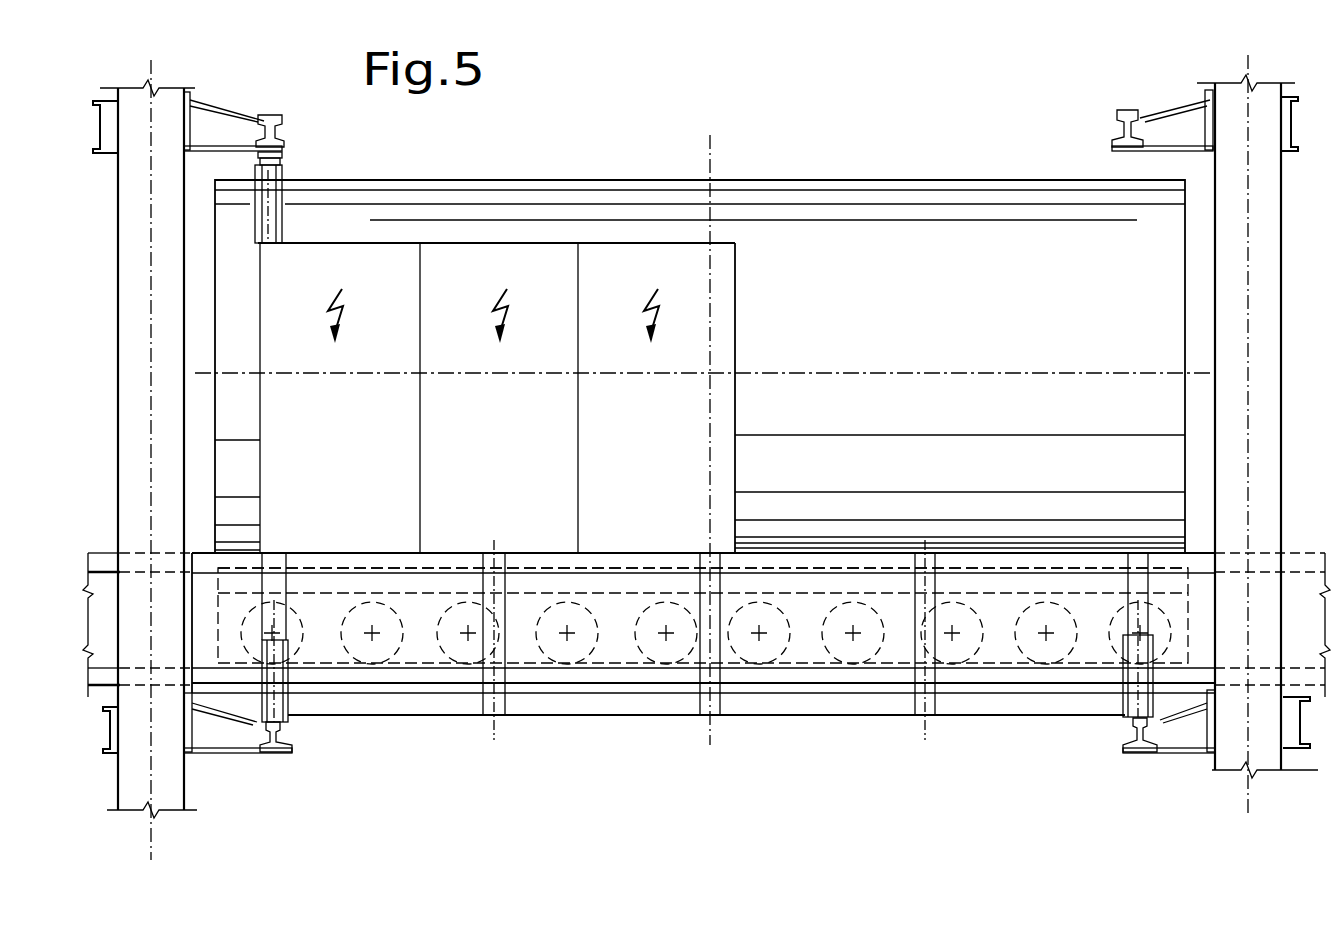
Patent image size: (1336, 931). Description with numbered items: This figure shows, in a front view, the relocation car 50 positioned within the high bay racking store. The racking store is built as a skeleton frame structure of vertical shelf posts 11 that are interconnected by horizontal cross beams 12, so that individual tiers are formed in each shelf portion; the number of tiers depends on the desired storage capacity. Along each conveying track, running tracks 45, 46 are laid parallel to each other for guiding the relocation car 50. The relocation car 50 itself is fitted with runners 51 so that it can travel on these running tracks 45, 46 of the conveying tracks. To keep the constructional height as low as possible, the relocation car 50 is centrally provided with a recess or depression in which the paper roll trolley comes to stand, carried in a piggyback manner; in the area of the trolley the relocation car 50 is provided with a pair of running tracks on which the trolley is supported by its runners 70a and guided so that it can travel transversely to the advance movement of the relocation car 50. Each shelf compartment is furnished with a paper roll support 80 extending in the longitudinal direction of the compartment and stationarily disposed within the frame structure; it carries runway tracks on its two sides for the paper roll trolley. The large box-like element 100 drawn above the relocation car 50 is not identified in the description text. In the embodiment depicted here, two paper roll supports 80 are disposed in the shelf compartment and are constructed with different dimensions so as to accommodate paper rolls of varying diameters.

The vertical shelf post 11 is at (125, 362).
The horizontal cross beam 12 is at (237, 742).
The running track 45 is at (266, 116).
The running track 46 is at (1128, 114).
The relocation car 50 is at (555, 722).
The runner 51 is at (288, 704).
The runner 70a is at (468, 665).
The paper roll support 80 is at (1050, 585).
The load carrier 100 is at (866, 200).